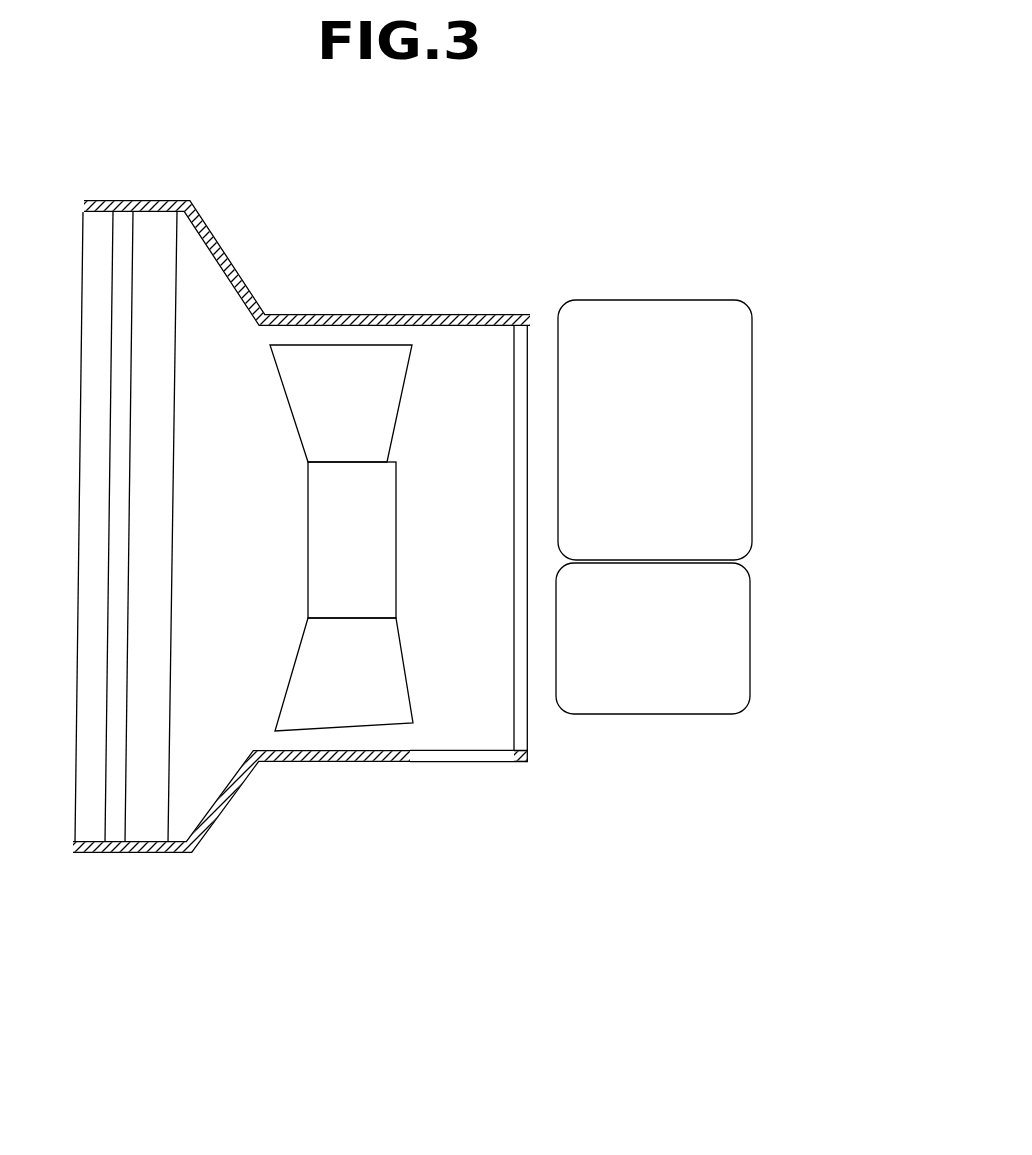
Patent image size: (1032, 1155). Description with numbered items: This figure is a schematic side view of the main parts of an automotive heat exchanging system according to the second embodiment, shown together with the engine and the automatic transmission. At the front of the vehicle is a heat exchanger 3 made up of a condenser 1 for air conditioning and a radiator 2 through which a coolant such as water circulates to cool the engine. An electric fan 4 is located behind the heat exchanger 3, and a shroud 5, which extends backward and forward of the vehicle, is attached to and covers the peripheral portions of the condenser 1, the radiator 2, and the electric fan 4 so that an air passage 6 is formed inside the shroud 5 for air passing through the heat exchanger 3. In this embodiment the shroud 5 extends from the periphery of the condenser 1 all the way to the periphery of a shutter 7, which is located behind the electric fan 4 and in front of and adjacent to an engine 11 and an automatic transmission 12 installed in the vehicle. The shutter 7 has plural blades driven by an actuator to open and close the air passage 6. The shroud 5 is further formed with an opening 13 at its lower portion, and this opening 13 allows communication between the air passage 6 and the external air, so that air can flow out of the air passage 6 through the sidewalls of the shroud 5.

The condenser 1 is at (95, 833).
The radiator 2 is at (145, 561).
The heat exchanger 3 is at (111, 596).
The electric fan 4 is at (362, 712).
The shroud 5 is at (183, 852).
The air passage 6 is at (227, 727).
The shutter 7 is at (515, 713).
The engine 11 is at (717, 411).
The automatic transmission 12 is at (724, 649).
The opening 13 is at (462, 758).